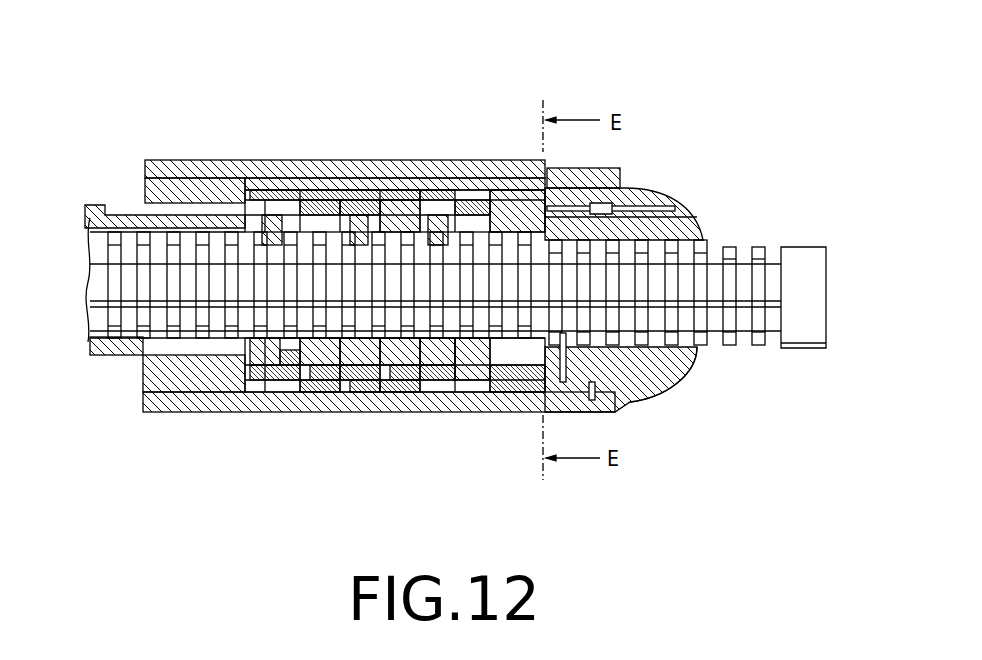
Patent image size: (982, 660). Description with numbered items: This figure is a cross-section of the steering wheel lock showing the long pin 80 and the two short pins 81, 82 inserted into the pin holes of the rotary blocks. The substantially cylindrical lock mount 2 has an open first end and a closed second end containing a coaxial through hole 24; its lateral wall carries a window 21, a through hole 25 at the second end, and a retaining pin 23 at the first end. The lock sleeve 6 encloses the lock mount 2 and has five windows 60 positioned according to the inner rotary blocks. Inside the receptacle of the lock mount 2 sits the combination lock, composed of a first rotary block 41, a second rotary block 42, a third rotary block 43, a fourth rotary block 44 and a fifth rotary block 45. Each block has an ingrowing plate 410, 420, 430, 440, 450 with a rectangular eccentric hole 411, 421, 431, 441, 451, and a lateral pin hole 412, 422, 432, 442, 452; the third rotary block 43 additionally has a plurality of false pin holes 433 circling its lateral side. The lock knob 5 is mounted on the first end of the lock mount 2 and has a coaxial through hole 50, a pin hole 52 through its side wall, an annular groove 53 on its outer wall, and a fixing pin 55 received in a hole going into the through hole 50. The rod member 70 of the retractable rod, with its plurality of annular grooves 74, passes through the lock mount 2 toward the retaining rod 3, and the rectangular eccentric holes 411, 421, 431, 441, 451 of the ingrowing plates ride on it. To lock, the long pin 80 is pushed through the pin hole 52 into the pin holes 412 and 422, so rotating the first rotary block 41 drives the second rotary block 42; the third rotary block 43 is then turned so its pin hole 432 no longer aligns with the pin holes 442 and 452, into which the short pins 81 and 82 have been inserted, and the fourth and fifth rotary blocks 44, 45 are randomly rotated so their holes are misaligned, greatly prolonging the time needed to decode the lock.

The lock mount 2 is at (217, 365).
The retaining rod 3 is at (97, 345).
The lock knob 5 is at (690, 376).
The lock sleeve 6 is at (178, 400).
The window 21 is at (255, 164).
The retaining pin 23 is at (592, 400).
The through hole 24 is at (128, 237).
The through hole 25 is at (178, 161).
The first rotary block 41 is at (273, 320).
The second rotary block 42 is at (338, 323).
The third rotary block 43 is at (407, 200).
The fourth rotary block 44 is at (430, 325).
The fifth rotary block 45 is at (495, 192).
The through hole 50 is at (700, 235).
The pin hole 52 is at (680, 209).
The annular groove 53 is at (651, 398).
The fixing pin 55 is at (563, 382).
The windows 60 is at (528, 176).
The rod member 70 is at (811, 267).
The annular grooves 74 is at (740, 262).
The long pin 80 is at (313, 194).
The short pin 81 is at (445, 192).
The short pin 82 is at (522, 375).
The ingrowing plate 410 is at (262, 322).
The rectangular eccentric hole 411 is at (240, 330).
The pin hole 412 is at (277, 190).
The ingrowing plate 420 is at (320, 325).
The rectangular eccentric hole 421 is at (300, 330).
The pin hole 422 is at (337, 200).
The ingrowing plate 430 is at (370, 325).
The rectangular eccentric hole 431 is at (360, 330).
The pin hole 432 is at (390, 325).
The false pin holes 433 is at (383, 200).
The ingrowing plate 440 is at (440, 328).
The rectangular eccentric hole 441 is at (420, 330).
The pin hole 442 is at (458, 200).
The ingrowing plate 450 is at (450, 330).
The rectangular eccentric hole 451 is at (448, 330).
The pin hole 452 is at (503, 387).